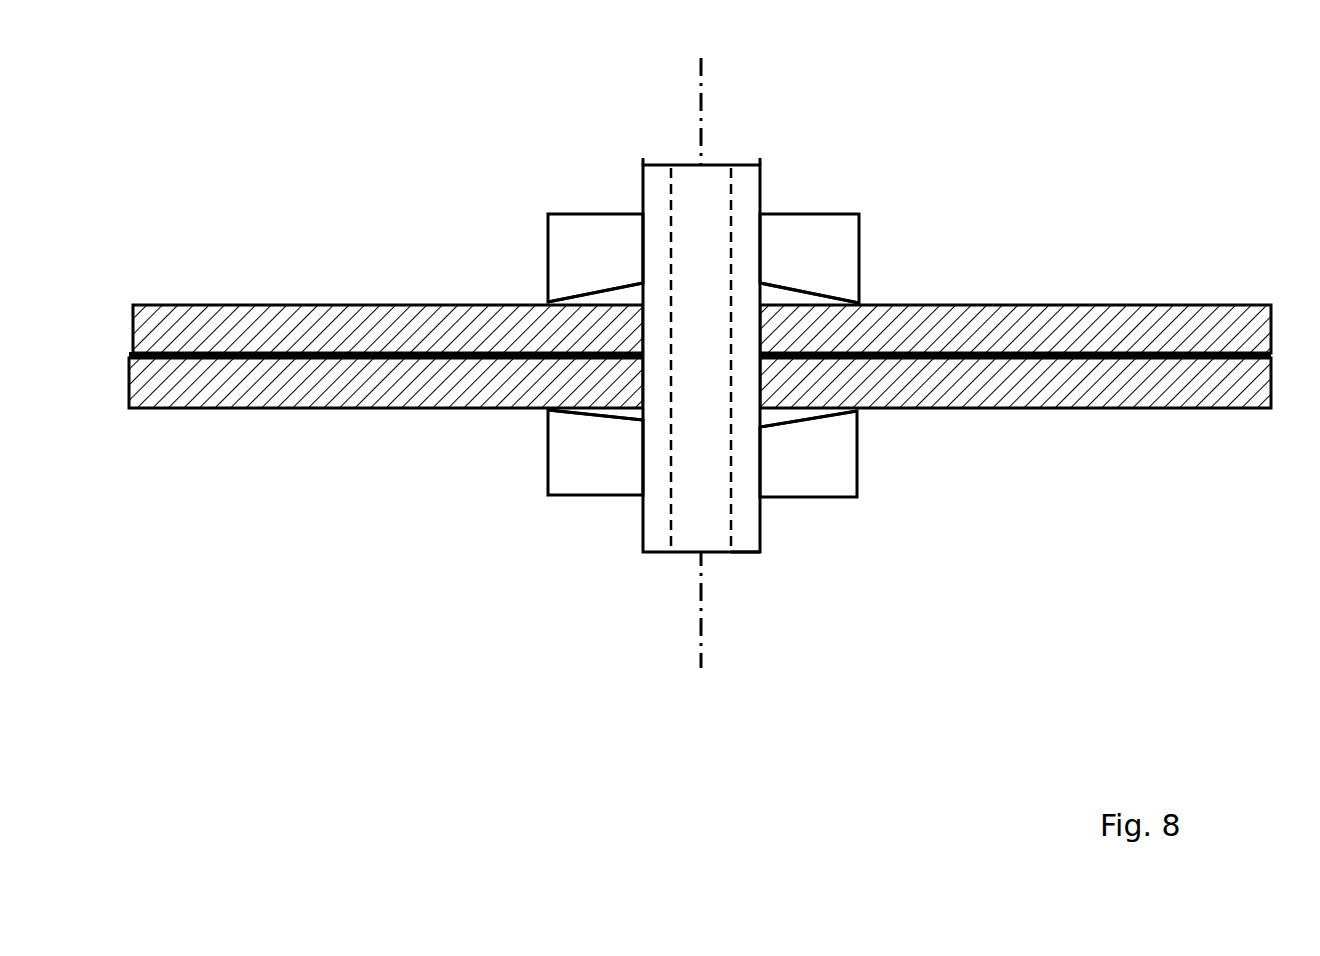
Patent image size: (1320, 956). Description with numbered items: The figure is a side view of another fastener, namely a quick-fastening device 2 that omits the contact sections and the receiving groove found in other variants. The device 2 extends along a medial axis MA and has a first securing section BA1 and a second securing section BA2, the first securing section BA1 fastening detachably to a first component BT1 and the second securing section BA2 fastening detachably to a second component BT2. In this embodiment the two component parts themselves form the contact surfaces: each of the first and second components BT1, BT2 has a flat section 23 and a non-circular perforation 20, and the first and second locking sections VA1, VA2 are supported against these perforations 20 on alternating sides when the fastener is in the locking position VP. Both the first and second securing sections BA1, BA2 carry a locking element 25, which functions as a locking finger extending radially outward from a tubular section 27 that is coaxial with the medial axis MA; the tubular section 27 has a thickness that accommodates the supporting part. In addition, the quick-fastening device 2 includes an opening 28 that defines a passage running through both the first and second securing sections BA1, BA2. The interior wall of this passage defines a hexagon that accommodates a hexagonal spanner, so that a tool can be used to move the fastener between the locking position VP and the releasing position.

The quick-fastening device 2 is at (910, 97).
The non-circular perforation 20 is at (636, 291).
The flat section 23 is at (796, 290).
The locking element 25 is at (577, 250).
The tubular section 27 is at (750, 548).
The opening 28 is at (719, 548).
The medial axis MA is at (708, 347).
The first securing section BA1 is at (585, 531).
The second securing section BA2 is at (918, 172).
The first locking section VA1 is at (891, 465).
The second locking section VA2 is at (516, 222).
The locking position VP is at (954, 561).
The first component BT1 is at (1085, 380).
The second component BT2 is at (1085, 322).